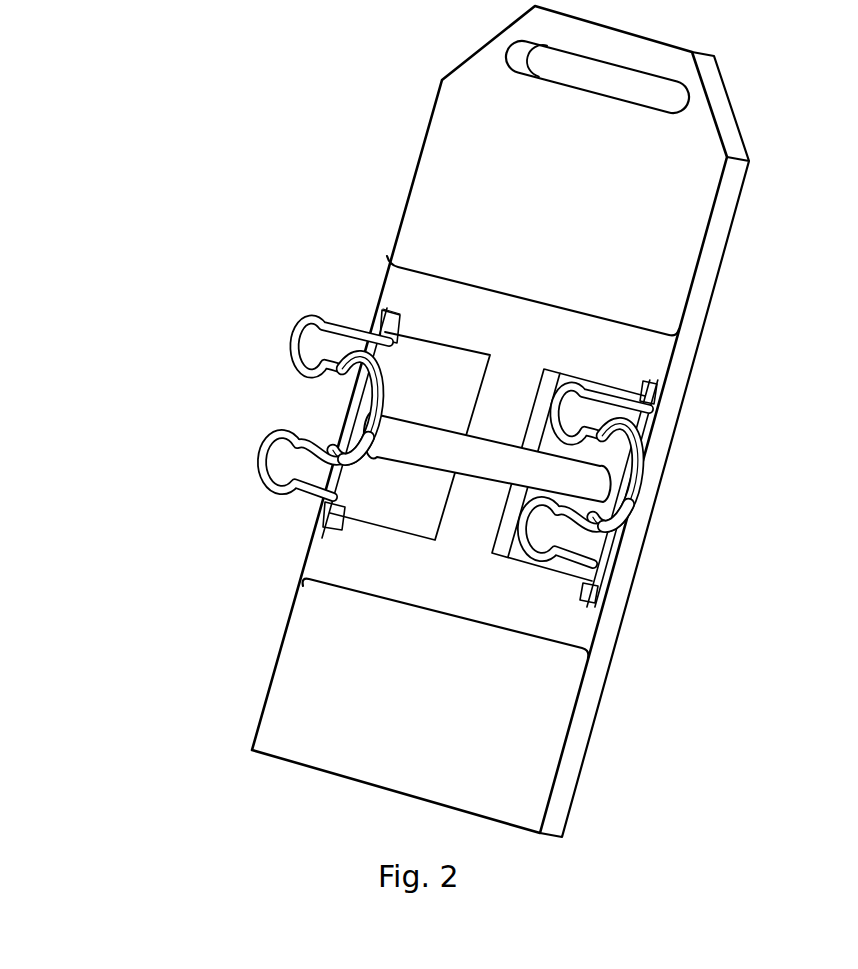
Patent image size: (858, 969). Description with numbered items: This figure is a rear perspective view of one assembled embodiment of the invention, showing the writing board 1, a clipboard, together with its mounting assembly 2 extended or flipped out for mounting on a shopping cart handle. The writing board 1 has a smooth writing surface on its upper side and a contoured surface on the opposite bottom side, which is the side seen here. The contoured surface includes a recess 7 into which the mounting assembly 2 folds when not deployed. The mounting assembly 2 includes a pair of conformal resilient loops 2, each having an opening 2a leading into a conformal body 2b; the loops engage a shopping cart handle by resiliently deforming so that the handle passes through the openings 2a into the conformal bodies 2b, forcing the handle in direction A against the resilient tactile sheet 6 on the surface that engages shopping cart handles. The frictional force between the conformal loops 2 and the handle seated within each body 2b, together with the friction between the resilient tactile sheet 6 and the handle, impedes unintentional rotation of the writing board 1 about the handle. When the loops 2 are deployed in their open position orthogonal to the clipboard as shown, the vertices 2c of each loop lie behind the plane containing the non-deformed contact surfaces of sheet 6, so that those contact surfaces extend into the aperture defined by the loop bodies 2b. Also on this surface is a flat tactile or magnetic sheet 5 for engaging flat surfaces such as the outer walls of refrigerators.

The writing board 1 is at (700, 131).
The mounting assembly 2 is at (645, 405).
The openings 2a is at (273, 410).
The conformal body 2b is at (386, 382).
The vertices 2c is at (630, 493).
The flat tactile or magnetic sheet 5 is at (668, 233).
The resilient tactile sheet 6 is at (432, 440).
The recess 7 is at (437, 361).
The direction A is at (328, 407).